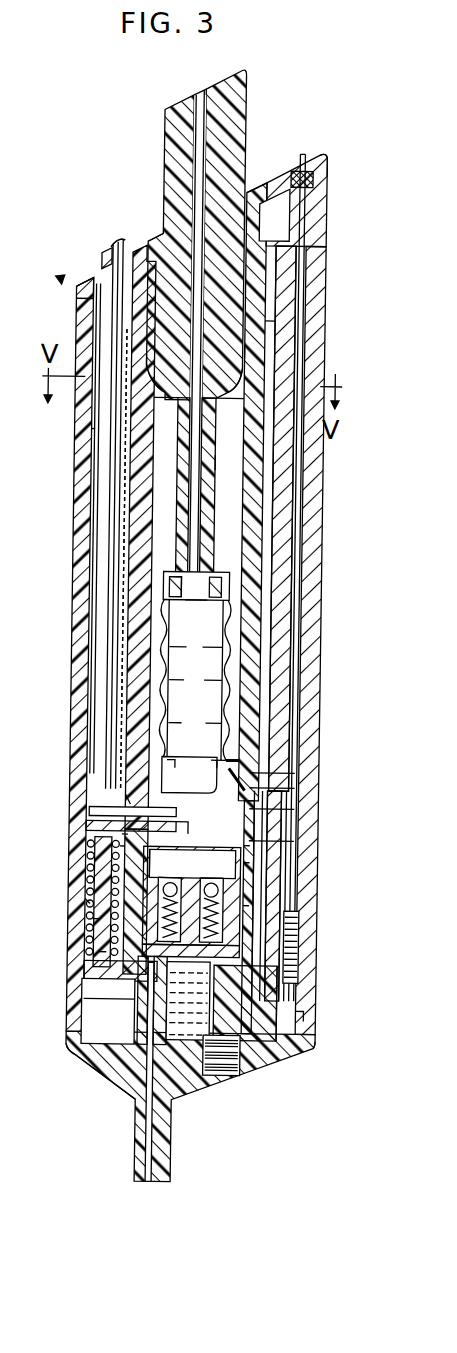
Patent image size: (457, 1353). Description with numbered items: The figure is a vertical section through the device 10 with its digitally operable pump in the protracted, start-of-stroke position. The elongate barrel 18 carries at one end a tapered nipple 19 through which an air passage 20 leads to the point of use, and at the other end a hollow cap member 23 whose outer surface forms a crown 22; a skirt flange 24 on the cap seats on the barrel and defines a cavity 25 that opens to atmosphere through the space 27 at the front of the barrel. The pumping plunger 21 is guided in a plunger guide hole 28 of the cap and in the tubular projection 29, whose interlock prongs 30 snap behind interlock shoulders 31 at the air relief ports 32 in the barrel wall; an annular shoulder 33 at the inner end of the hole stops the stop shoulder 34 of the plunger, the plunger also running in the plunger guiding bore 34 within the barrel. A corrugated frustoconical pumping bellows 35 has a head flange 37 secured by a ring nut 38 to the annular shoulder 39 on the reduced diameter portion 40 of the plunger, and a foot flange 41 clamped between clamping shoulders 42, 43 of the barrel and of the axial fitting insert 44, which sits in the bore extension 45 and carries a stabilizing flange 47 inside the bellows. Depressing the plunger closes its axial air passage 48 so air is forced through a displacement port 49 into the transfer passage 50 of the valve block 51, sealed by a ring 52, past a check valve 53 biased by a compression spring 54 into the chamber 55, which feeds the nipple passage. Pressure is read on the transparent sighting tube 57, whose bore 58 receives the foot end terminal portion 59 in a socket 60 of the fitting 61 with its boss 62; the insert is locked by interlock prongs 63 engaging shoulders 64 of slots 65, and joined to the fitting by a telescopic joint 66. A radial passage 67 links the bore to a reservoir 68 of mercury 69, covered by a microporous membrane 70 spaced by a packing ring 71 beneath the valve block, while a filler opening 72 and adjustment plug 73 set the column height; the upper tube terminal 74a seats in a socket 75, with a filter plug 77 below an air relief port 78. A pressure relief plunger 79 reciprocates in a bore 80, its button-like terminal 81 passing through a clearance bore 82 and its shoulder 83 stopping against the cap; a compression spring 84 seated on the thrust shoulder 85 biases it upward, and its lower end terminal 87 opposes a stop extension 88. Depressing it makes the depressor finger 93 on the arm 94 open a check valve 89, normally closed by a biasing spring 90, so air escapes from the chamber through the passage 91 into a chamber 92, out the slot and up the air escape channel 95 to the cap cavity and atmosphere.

The device 10 is at (58, 286).
The barrel 18 is at (76, 613).
The tapered nipple 19 is at (142, 1145).
The air passage 20 is at (160, 1133).
The plunger 21 is at (243, 78).
The crown 22 is at (250, 195).
The cap member 23 is at (83, 285).
The skirt flange 24 is at (77, 322).
The cavity 25 is at (136, 262).
The space 27 is at (265, 277).
The plunger guide hole 28 is at (245, 182).
The tubular plunger guide and cap retaining projection 29 is at (262, 330).
The interlock prongs 30 is at (150, 372).
The interlock shoulders 31 is at (139, 362).
The air relief ports 32 is at (140, 383).
The annular shoulder 33 is at (240, 222).
The stop shoulder / plunger guiding bore 34 is at (152, 250).
The pumping bellows 35 is at (232, 667).
The annular flange 37 is at (223, 573).
The ring nut 38 is at (218, 607).
The collar 39 is at (182, 573).
The reduced diameter portion 40 is at (216, 460).
The annular flange 41 is at (252, 783).
The clamping shoulder 42 is at (255, 770).
The clamping shoulder 43 is at (225, 765).
The axial fitting insert 44 is at (253, 817).
The extension of the barrel bore 45 is at (257, 887).
The stabilizing flange 47 is at (178, 763).
The axial air passage 48 is at (196, 95).
The displacement port 49 is at (218, 790).
The air pressure transfer passage 50 is at (182, 900).
The valve block 51 is at (250, 907).
The sealing ring 52 is at (191, 891).
The check valve 53 is at (220, 899).
The coiled compression spring 54 is at (225, 950).
The chamber 55 is at (295, 963).
The sighting tube 57 is at (313, 567).
The bore 58 is at (295, 497).
The foot end terminal portion 59 is at (311, 1045).
The socket 60 is at (309, 1013).
The fitting 61 is at (302, 1057).
The boss 62 is at (166, 1008).
The interlock prongs 63 is at (133, 833).
The shoulders 64 is at (129, 847).
The slots 65 is at (188, 831).
The telescopic joint 66 is at (80, 1005).
The radially extending passage 67 is at (269, 1067).
The reservoir 68 is at (191, 1025).
The mercury 69 is at (194, 1032).
The microporous membrane or screen 70 is at (111, 953).
The packing and spacer ring 71 is at (104, 918).
The filler opening 72 is at (228, 1080).
The closure plug and mercury height adjustment plug 73 is at (240, 1073).
The top edge 74a is at (322, 172).
The socket 75 is at (274, 215).
The plug 77 is at (294, 160).
The air relief port 78 is at (300, 176).
The pressure relief plunger 79 is at (104, 500).
The bore 80 is at (94, 445).
The button-like terminal 81 is at (112, 245).
The clearance bore 82 is at (110, 258).
The shoulder 83 is at (111, 514).
The coiled compression spring 84 is at (90, 903).
The thrust shoulder 85 is at (88, 978).
The lower end terminal 87 is at (107, 872).
The stop extension 88 is at (124, 935).
The check valve 89 is at (160, 871).
The biasing spring 90 is at (201, 891).
The passage 91 is at (155, 857).
The chamber 92 is at (134, 793).
The depressor finger 93 is at (173, 827).
The arm 94 is at (99, 810).
The air escape channel 95 is at (131, 642).